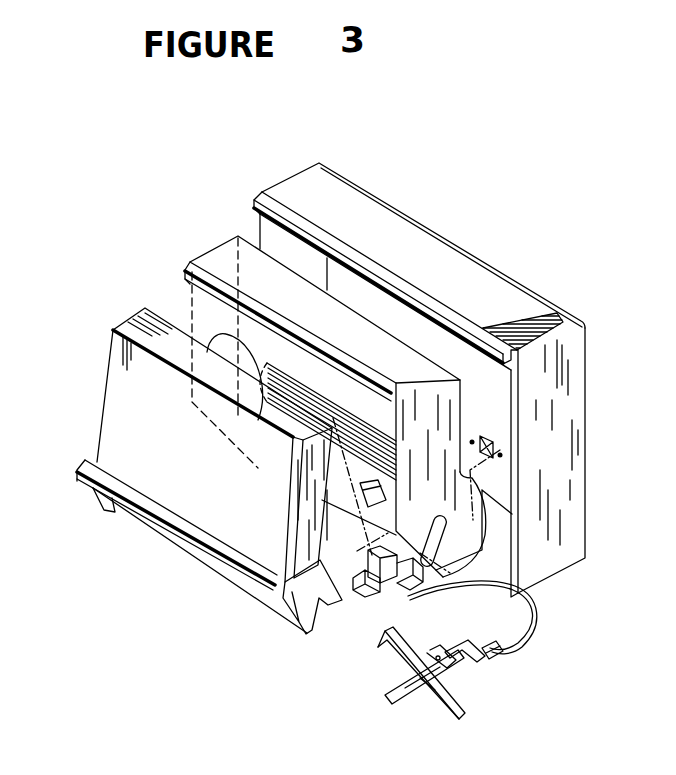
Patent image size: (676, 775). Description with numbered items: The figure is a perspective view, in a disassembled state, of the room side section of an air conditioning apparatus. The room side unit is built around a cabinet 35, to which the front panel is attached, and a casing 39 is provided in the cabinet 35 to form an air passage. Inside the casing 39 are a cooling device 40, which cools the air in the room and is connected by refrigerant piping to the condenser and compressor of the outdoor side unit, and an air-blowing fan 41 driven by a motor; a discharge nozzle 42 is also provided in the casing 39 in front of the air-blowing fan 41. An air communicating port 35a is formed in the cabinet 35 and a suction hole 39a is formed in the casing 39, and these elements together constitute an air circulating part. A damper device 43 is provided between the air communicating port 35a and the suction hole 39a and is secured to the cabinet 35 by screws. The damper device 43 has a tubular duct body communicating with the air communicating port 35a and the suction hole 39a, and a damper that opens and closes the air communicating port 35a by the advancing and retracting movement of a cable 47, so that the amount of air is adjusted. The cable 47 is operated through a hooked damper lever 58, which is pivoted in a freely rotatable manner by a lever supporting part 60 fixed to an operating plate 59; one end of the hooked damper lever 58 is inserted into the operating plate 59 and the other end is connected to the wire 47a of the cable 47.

The cabinet 35 is at (456, 252).
The air communicating port 35a is at (495, 440).
The casing 39 is at (193, 262).
The suction hole 39a is at (376, 500).
The cooling device 40 is at (114, 330).
The air-blowing fan 41 is at (220, 334).
The discharge nozzle 42 is at (84, 471).
The damper device 43 is at (360, 601).
The cable 47 is at (536, 626).
The wire 47a is at (487, 661).
The hooked damper lever 58 is at (468, 662).
The operating plate 59 is at (428, 700).
The lever supporting part 60 is at (458, 690).